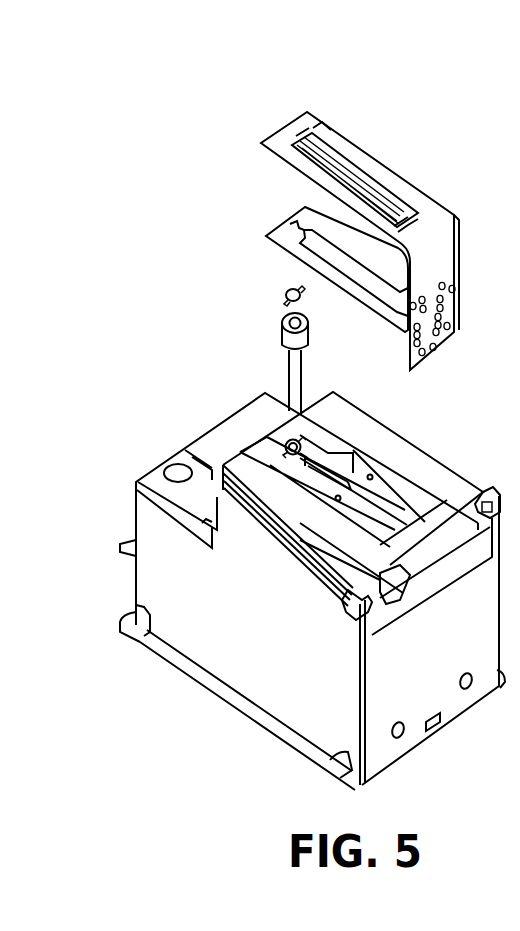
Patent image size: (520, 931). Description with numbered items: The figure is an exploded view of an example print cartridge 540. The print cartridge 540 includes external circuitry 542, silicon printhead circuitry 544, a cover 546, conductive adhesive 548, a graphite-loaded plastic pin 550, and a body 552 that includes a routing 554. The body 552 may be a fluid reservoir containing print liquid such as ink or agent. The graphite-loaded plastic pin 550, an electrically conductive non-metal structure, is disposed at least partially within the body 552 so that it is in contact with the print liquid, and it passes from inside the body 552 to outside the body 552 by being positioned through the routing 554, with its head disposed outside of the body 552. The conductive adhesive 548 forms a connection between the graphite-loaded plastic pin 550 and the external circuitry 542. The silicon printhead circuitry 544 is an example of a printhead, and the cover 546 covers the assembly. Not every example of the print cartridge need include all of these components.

The print cartridge 540 is at (142, 68).
The external circuitry 542 is at (268, 141).
The silicon printhead circuitry 544 is at (367, 180).
The cover 546 is at (278, 241).
The conductive adhesive 548 is at (284, 294).
The graphite-loaded plastic pin 550 is at (287, 336).
The body 552 is at (136, 547).
The routing 554 is at (288, 445).